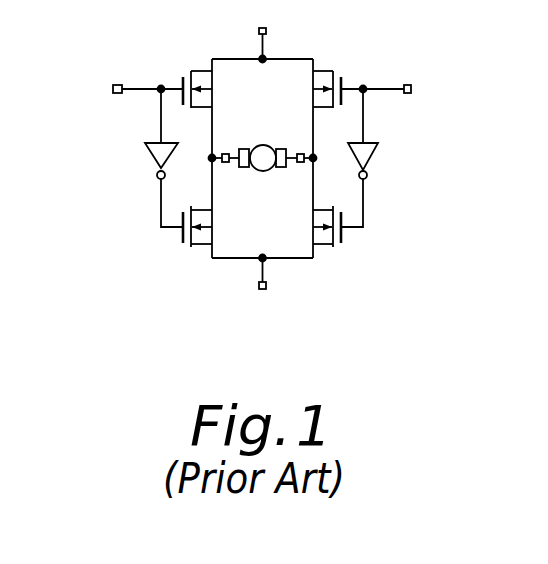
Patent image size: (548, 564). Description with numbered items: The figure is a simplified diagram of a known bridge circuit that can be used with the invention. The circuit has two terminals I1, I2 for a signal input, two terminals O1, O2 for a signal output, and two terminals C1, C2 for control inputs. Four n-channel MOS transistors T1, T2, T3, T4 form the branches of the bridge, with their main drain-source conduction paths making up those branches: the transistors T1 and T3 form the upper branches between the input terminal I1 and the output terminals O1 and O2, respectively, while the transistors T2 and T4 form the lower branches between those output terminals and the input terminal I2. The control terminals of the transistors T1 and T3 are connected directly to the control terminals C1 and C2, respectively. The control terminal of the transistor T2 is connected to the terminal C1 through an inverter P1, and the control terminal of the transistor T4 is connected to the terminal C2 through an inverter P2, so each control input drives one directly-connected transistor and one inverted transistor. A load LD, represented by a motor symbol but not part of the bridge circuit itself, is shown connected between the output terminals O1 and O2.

The control input terminal C1 is at (134, 89).
The control input terminal C2 is at (393, 89).
The signal input terminal I1 is at (264, 31).
The signal input terminal I2 is at (261, 291).
The n-channel MOS transistor T1 is at (211, 89).
The n-channel MOS transistor T2 is at (211, 226).
The n-channel MOS transistor T3 is at (311, 89).
The n-channel MOS transistor T4 is at (311, 226).
The inverter P1 is at (155, 158).
The inverter P2 is at (373, 158).
The signal output terminal O1 is at (222, 141).
The signal output terminal O2 is at (303, 141).
The load LD is at (263, 171).